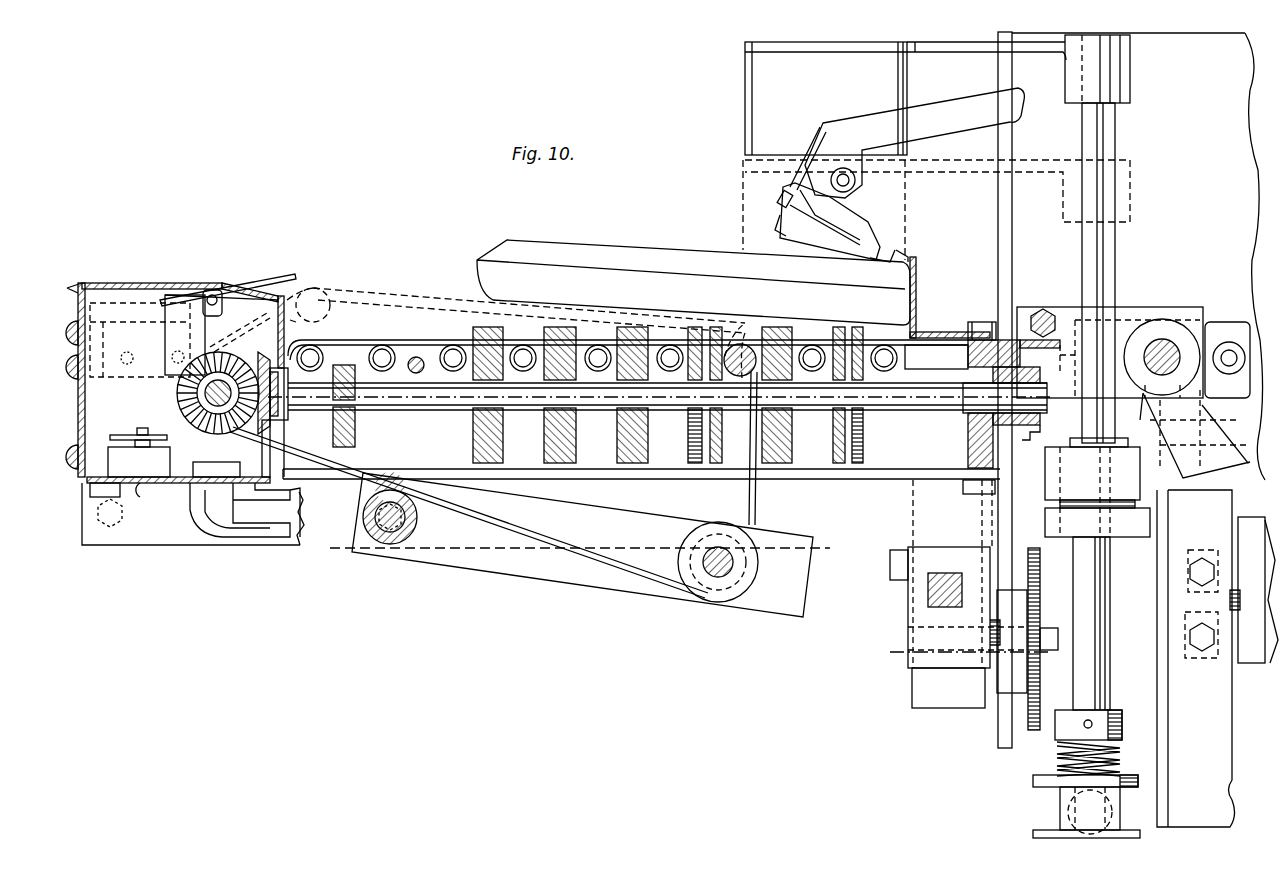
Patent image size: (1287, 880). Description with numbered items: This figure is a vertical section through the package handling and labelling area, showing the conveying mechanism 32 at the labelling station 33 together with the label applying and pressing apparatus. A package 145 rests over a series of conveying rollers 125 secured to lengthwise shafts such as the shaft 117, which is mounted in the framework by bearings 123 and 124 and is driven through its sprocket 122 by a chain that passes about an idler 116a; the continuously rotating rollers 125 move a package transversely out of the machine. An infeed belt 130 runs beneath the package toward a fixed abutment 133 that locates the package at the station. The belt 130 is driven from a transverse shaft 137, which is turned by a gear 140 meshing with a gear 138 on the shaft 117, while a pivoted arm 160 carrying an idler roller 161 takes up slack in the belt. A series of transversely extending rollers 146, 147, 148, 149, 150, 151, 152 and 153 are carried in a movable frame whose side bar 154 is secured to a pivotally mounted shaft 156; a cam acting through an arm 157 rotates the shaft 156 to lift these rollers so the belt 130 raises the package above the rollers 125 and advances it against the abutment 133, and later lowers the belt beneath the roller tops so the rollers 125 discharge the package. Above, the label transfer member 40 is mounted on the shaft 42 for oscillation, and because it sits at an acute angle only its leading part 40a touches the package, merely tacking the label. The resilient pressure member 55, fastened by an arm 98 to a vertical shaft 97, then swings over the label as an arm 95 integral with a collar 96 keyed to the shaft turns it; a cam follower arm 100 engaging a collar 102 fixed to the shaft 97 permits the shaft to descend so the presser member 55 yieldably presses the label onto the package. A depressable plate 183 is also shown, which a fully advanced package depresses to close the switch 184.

The conveying mechanism 32 is at (540, 620).
The labelling station 33 is at (919, 256).
The label transfer member 40 is at (760, 240).
The leading part of transfer member 40a is at (911, 246).
The mounting shaft 42 is at (955, 110).
The resilient pressure member 55 is at (752, 130).
The arm 95 is at (1250, 455).
The collar 96 is at (1135, 487).
The presser arm support shaft 97 is at (1100, 255).
The arm 98 is at (1068, 63).
The cam follower arm 100 is at (1138, 808).
The collar 102 is at (1035, 783).
The idler 116a is at (1030, 730).
The shaft 117 is at (926, 400).
The sprocket 122 is at (1033, 438).
The bearing 123 is at (297, 401).
The bearing 124 is at (952, 413).
The conveying rollers 125 is at (553, 440).
The belt 130 is at (398, 290).
The fixed abutment 133 is at (918, 275).
The rotatable shaft 137 is at (205, 396).
The gear 138 is at (325, 451).
The gear 140 is at (192, 422).
The package 145 is at (503, 248).
The transversely extending roller 146 is at (318, 350).
The transversely extending roller 147 is at (385, 372).
The transversely extending roller 148 is at (452, 372).
The transversely extending roller 149 is at (523, 345).
The transversely extending roller 150 is at (601, 370).
The transversely extending roller 151 is at (746, 340).
The transversely extending roller 152 is at (812, 342).
The transversely extending roller 153 is at (882, 342).
The side bar 154 is at (946, 369).
The transversely extending shaft 156 is at (1168, 340).
The arm 157 is at (1190, 472).
The pivoted arm 160 is at (635, 588).
The idler roller 161 is at (742, 590).
The depressable plate 183 is at (275, 260).
The switch 184 is at (150, 385).